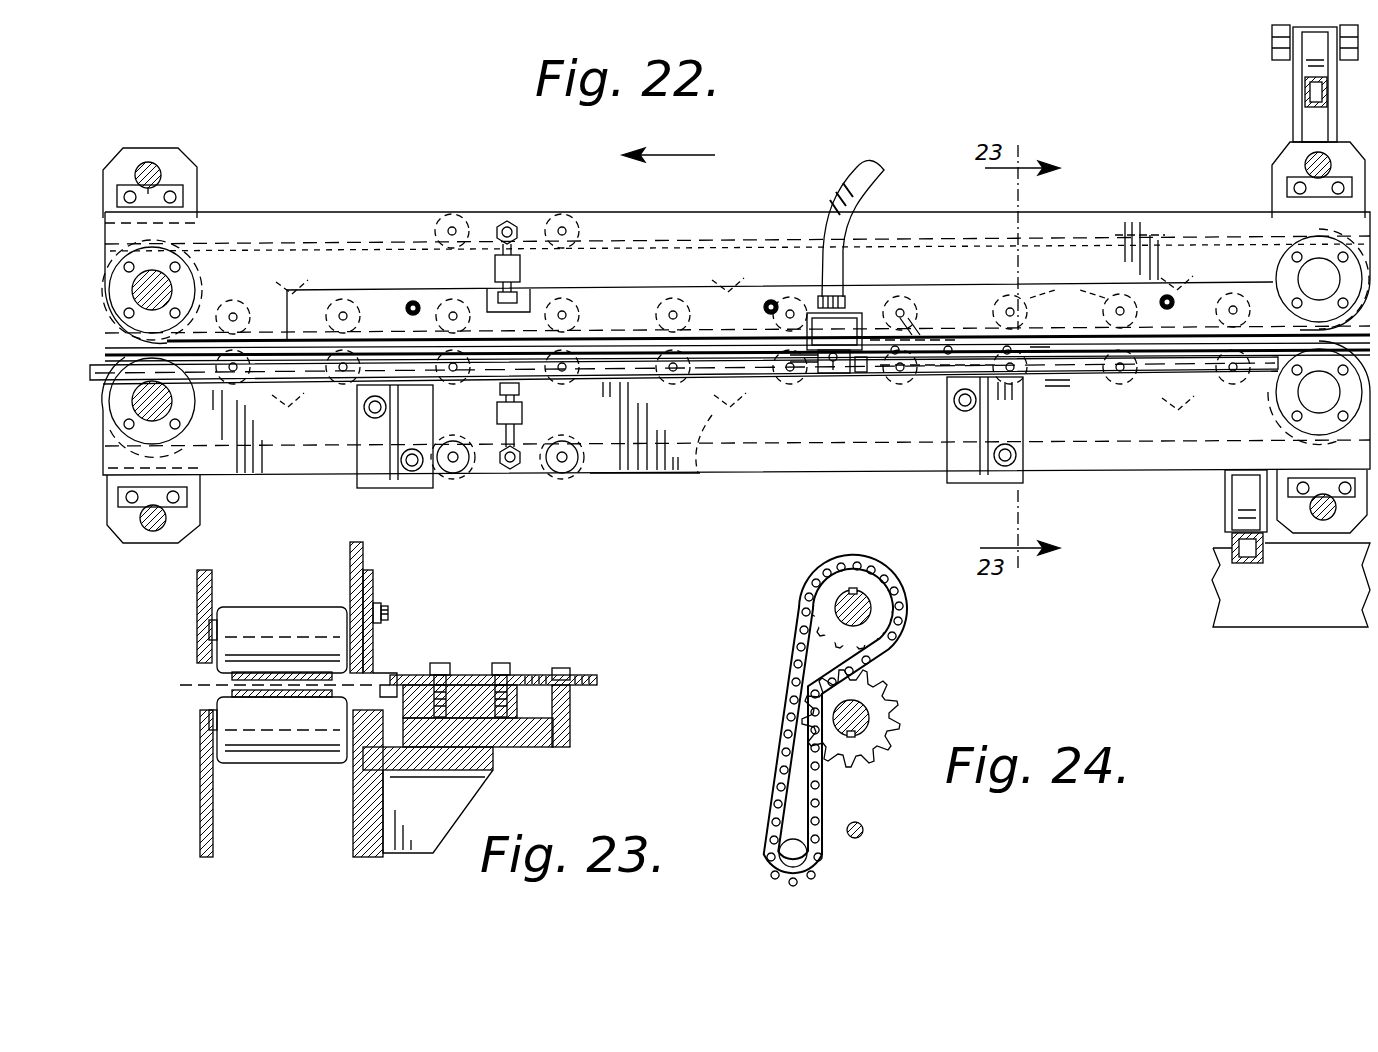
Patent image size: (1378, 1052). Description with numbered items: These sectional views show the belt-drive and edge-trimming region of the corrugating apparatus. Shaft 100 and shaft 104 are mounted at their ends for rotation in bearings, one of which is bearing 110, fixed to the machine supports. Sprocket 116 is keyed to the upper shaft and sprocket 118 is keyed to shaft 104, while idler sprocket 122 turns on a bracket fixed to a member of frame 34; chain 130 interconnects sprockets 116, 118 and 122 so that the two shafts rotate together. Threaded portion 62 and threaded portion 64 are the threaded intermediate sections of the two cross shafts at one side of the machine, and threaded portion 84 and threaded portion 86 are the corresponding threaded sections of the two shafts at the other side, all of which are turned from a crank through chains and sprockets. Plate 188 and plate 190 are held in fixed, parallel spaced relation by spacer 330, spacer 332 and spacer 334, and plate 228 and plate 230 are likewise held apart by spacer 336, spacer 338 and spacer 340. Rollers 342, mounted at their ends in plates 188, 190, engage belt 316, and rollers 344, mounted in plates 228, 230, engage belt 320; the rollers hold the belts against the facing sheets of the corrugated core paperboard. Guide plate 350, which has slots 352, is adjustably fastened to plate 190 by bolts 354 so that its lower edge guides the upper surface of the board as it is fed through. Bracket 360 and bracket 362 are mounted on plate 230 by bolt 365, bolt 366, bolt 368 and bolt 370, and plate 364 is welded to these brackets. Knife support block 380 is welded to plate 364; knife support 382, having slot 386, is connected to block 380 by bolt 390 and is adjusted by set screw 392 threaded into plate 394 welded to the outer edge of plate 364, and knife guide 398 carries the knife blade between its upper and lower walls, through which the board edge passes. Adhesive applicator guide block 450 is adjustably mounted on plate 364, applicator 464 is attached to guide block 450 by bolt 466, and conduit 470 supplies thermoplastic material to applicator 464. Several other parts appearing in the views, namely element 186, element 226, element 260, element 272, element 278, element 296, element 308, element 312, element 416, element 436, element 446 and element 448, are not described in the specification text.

In FIG. 22, the frame 34 is at (1215, 626).
In FIG. 22, the threaded portion 62 is at (162, 178).
In FIG. 22, the threaded portion 64 is at (155, 533).
In FIG. 22, the threaded portion 84 is at (1308, 170).
In FIG. 22, the threaded portion 86 is at (1324, 520).
In FIG. 22, the shaft 100 is at (172, 292).
In FIG. 22, the shaft 104 is at (175, 402).
In FIG. 24, the shaft 104 is at (872, 718).
In FIG. 24, the bearing 110 is at (835, 602).
In FIG. 24, the sprocket 116 is at (882, 605).
In FIG. 24, the sprocket 118 is at (893, 702).
In FIG. 24, the idler sprocket 122 is at (818, 872).
In FIG. 24, the chain 130 is at (892, 650).
In FIG. 22, the upper conveyor chain 186 is at (195, 243).
In FIG. 23, the plate 188 is at (197, 586).
In FIG. 22, the plate 190 is at (395, 222).
In FIG. 23, the plate 190 is at (365, 553).
In FIG. 22, the lower conveyor chain 226 is at (172, 470).
In FIG. 23, the plate 228 is at (200, 815).
In FIG. 22, the plate 230 is at (602, 478).
In FIG. 23, the plate 230 is at (353, 838).
In FIG. 22, the adjusting nut 260 is at (1306, 92).
In FIG. 22, the upper idler wheel 272 is at (1272, 268).
In FIG. 22, the adjusting screw 278 is at (1304, 62).
In FIG. 22, the adjusting nut 296 is at (1232, 548).
In FIG. 22, the lower idler wheel 308 is at (1282, 398).
In FIG. 22, the adjusting post 312 is at (1232, 502).
In FIG. 22, the belt 316 is at (380, 318).
In FIG. 23, the belt 316 is at (310, 672).
In FIG. 22, the belt 320 is at (620, 385).
In FIG. 23, the belt 320 is at (236, 700).
In FIG. 22, the spacer 330 is at (1167, 280).
In FIG. 22, the spacer 332 is at (748, 275).
In FIG. 22, the spacer 334 is at (300, 282).
In FIG. 22, the spacer 336 is at (1181, 417).
In FIG. 22, the spacer 338 is at (700, 475).
In FIG. 22, the spacer 340 is at (275, 412).
In FIG. 22, the rollers 342 is at (1095, 295).
In FIG. 23, the rollers 342 is at (275, 600).
In FIG. 23, the rollers 344 is at (258, 765).
In FIG. 22, the guide plate 350 is at (690, 289).
In FIG. 23, the guide plate 350 is at (374, 592).
In FIG. 23, the slots 352 is at (383, 605).
In FIG. 22, the bolts 354 is at (415, 303).
In FIG. 23, the bolts 354 is at (390, 613).
In FIG. 22, the bracket 360 is at (952, 480).
In FIG. 23, the bracket 360 is at (425, 858).
In FIG. 22, the bracket 362 is at (412, 485).
In FIG. 22, the plate 364 is at (706, 383).
In FIG. 23, the plate 364 is at (510, 750).
In FIG. 22, the bolt 365 is at (960, 405).
In FIG. 22, the bolt 366 is at (1003, 470).
In FIG. 22, the bolt 368 is at (290, 412).
In FIG. 22, the bolt 370 is at (360, 488).
In FIG. 23, the knife support block 380 is at (572, 735).
In FIG. 23, the knife support 382 is at (447, 665).
In FIG. 23, the slot 386 is at (561, 667).
In FIG. 23, the bolt 390 is at (502, 664).
In FIG. 22, the set screw 392 is at (1032, 345).
In FIG. 23, the set screw 392 is at (586, 675).
In FIG. 22, the plate 394 is at (1045, 380).
In FIG. 23, the plate 394 is at (572, 706).
In FIG. 23, the knife guide 398 is at (390, 673).
In FIG. 22, the link 416 is at (910, 345).
In FIG. 22, the pivot pin 436 is at (900, 312).
In FIG. 22, the valve block 446 is at (828, 380).
In FIG. 22, the pin 448 is at (858, 378).
In FIG. 22, the adhesive applicator guide block 450 is at (893, 300).
In FIG. 22, the applicator 464 is at (863, 316).
In FIG. 22, the bolt 466 is at (812, 380).
In FIG. 22, the conduit 470 is at (866, 172).